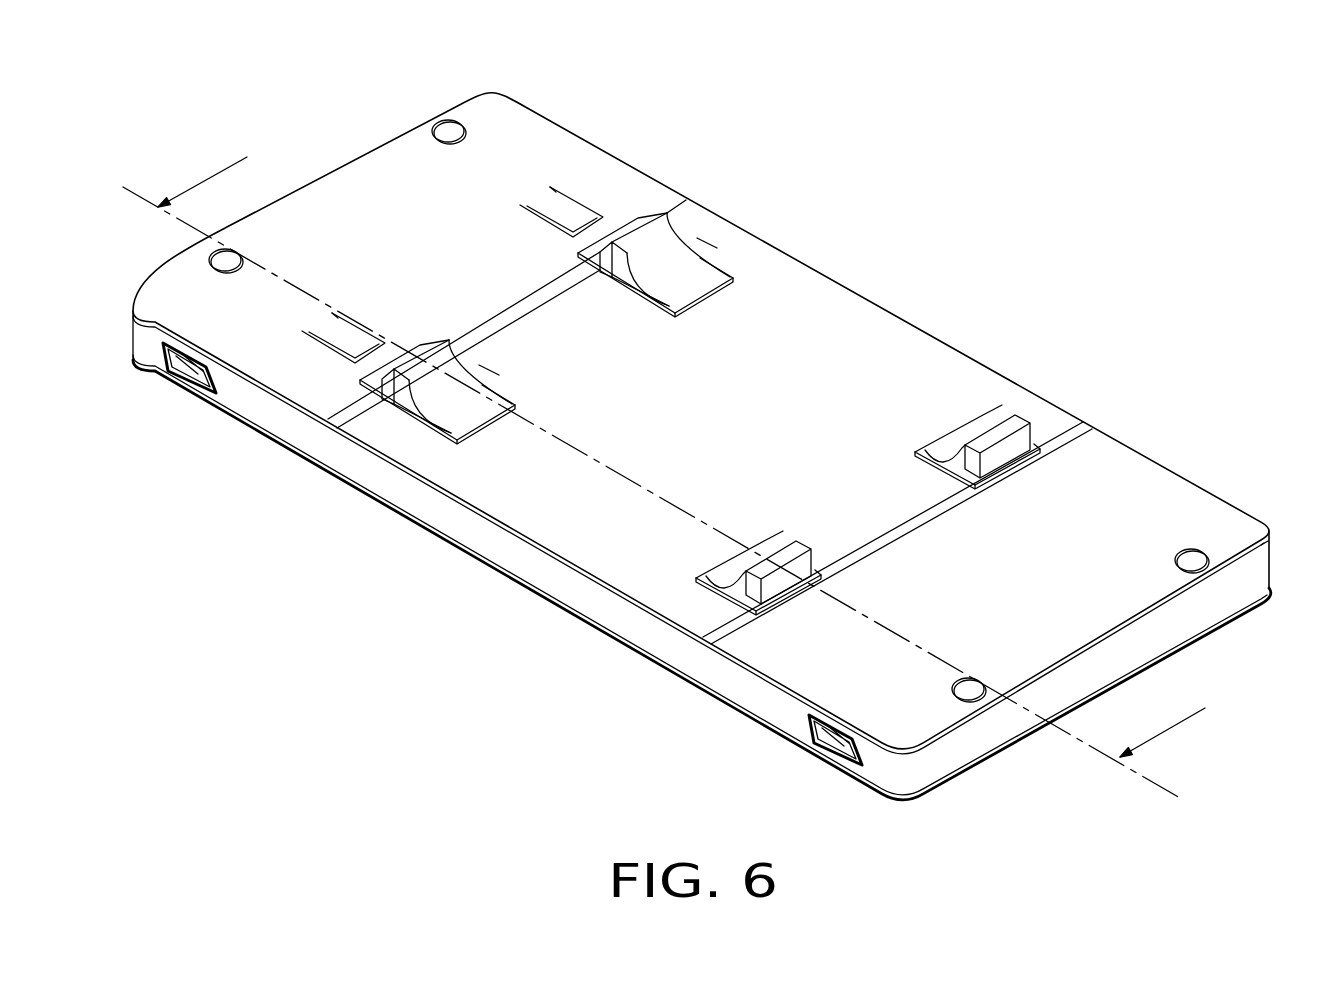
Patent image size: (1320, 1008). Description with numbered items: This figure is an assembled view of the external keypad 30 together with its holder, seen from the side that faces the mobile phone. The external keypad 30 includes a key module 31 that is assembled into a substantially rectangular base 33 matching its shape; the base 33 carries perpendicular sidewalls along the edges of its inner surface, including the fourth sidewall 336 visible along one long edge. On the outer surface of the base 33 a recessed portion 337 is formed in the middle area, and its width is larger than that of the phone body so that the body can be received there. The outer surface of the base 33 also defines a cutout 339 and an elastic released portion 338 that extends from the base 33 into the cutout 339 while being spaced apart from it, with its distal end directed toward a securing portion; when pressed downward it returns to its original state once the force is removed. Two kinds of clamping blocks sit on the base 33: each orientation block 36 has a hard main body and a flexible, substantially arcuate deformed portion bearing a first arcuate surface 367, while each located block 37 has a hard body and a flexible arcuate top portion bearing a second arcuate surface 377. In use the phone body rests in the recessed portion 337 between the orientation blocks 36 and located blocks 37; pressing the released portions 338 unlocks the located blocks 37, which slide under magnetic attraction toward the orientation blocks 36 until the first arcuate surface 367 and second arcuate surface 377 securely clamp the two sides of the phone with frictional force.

The external keypad 30 is at (808, 49).
The key module 31 is at (547, 608).
The base 33 is at (1173, 465).
The fourth sidewall 336 is at (1180, 615).
The recessed portion 337 is at (805, 338).
The released portion 338 is at (563, 212).
The cutout 339 is at (595, 213).
The orientation block 36 is at (1010, 428).
The first arcuate surface 367 is at (965, 430).
The located block 37 is at (660, 232).
The second arcuate surface 377 is at (663, 257).